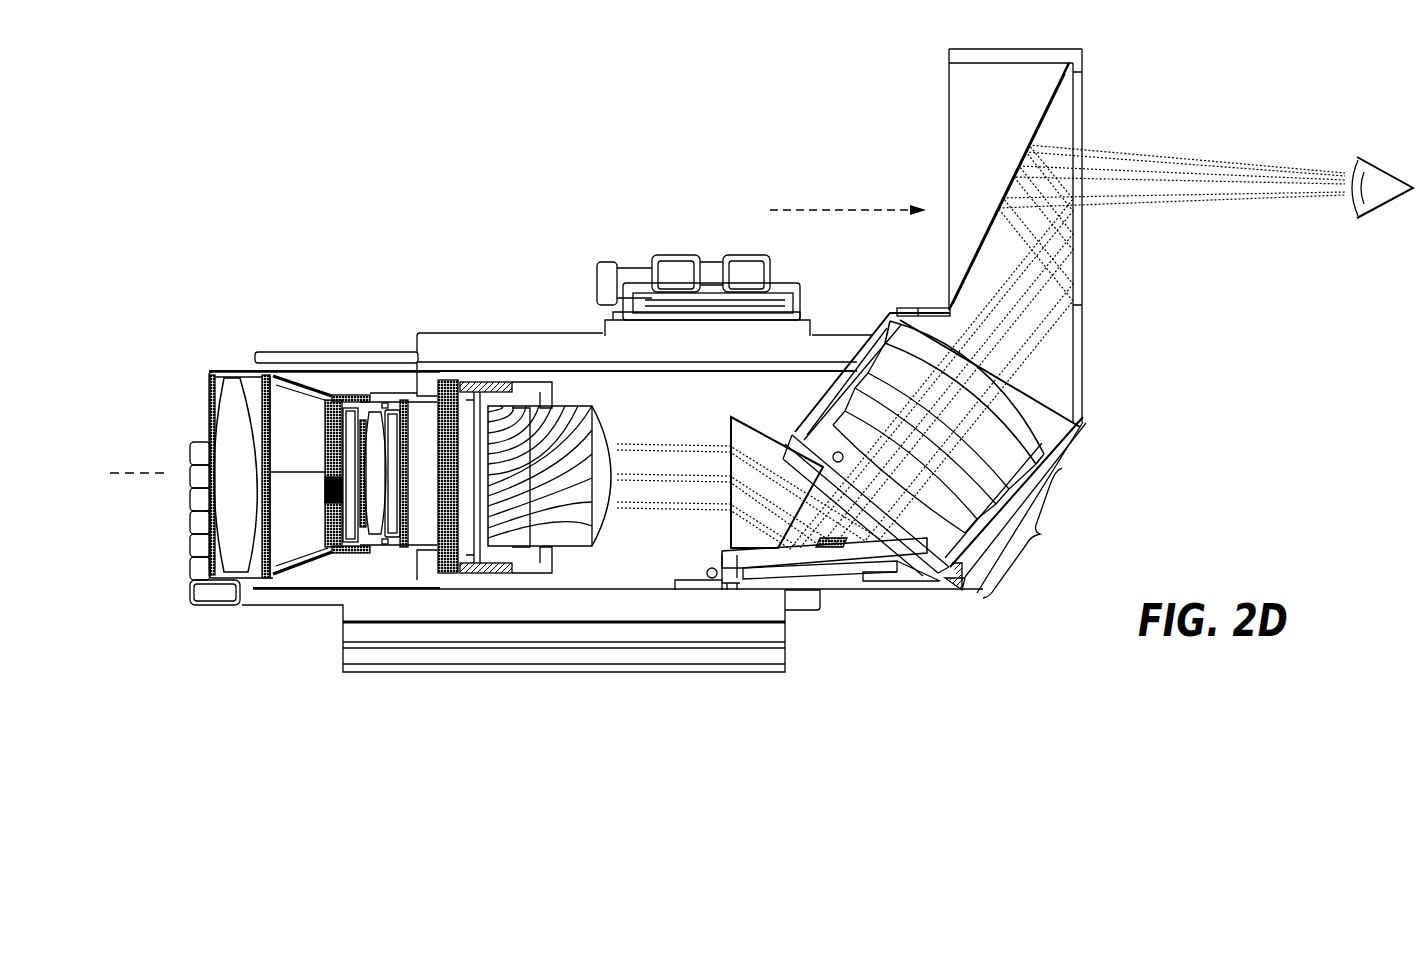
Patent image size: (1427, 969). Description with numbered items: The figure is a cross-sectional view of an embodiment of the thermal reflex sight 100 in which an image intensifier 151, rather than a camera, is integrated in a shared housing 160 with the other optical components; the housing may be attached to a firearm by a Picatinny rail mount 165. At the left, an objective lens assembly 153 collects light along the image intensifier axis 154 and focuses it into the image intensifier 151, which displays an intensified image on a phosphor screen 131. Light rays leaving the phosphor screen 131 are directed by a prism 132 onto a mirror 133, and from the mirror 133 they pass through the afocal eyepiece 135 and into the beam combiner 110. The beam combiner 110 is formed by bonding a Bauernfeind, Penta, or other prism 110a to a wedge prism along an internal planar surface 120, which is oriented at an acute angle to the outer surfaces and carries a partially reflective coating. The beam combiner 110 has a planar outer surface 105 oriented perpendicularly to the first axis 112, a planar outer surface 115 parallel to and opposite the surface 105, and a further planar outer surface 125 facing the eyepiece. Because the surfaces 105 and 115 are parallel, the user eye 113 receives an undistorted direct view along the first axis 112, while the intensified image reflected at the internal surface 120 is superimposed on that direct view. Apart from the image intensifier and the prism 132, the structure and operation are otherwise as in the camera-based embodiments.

The thermal reflex sight 100 is at (455, 118).
The planar outer surface 105 is at (1083, 125).
The beam combiner 110 is at (920, 153).
The prism 110a is at (1082, 92).
The first axis 112 is at (845, 210).
The user eye 113 is at (1367, 222).
The planar outer surface 115 is at (948, 275).
The internal planar surface 120 is at (1055, 83).
The planar outer surface 125 is at (1027, 352).
The phosphor screen 131 is at (635, 490).
The prism 132 is at (748, 538).
The mirror 133 is at (848, 560).
The afocal eyepiece 135 is at (1033, 533).
The image intensifier 151 is at (570, 545).
The objective lens assembly 153 is at (243, 412).
The image intensifier axis 154 is at (117, 471).
The shared housing 160 is at (490, 330).
The Picatinny rail mount 165 is at (343, 640).